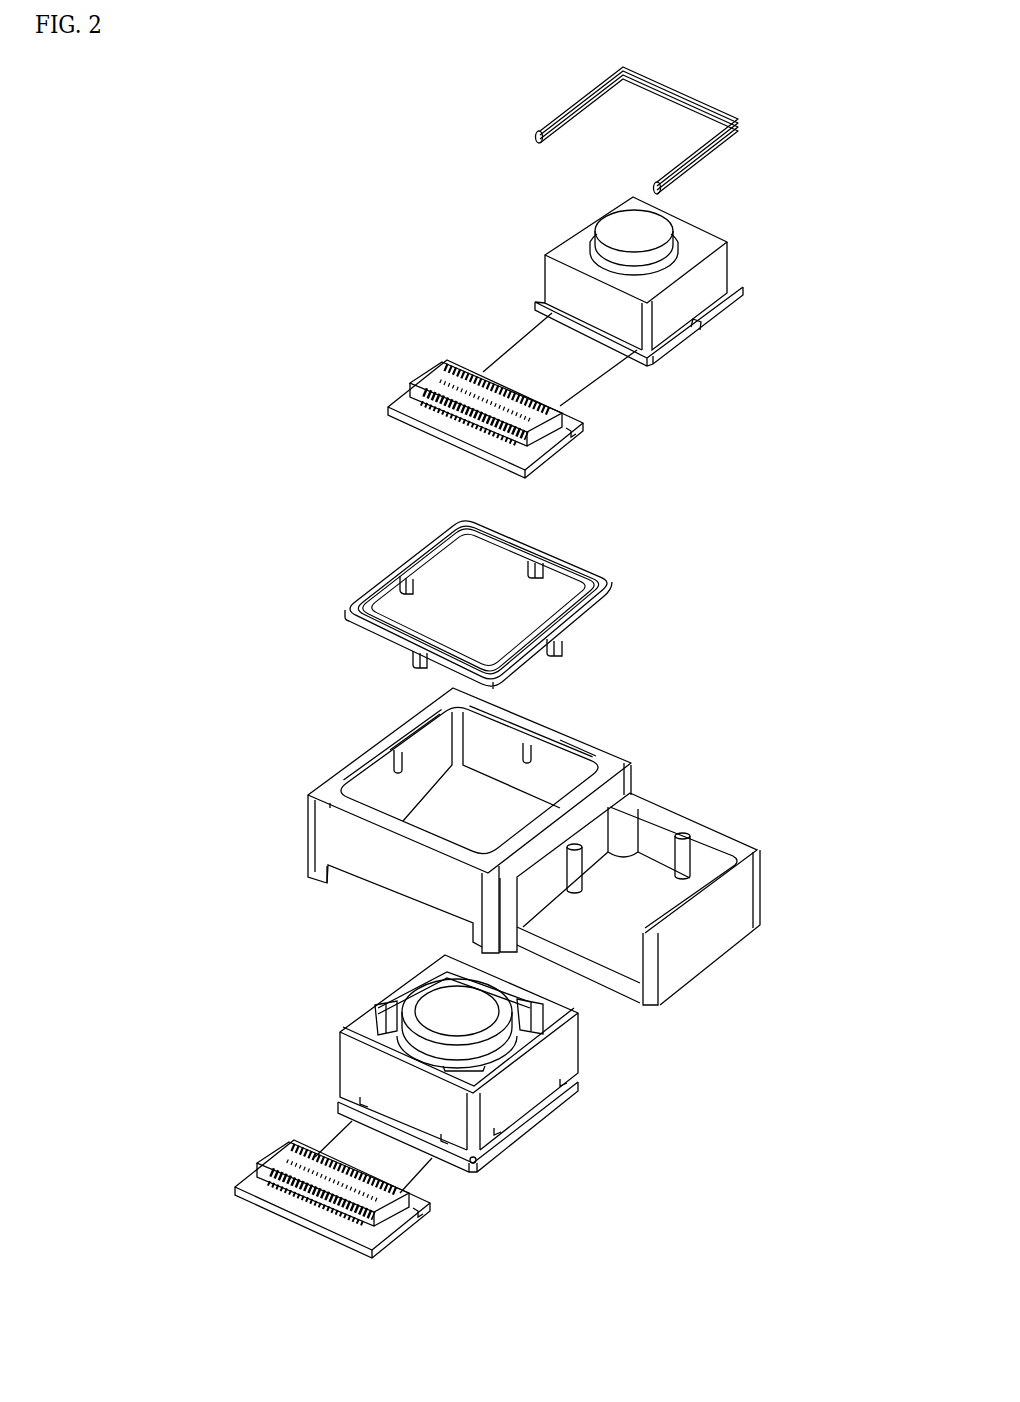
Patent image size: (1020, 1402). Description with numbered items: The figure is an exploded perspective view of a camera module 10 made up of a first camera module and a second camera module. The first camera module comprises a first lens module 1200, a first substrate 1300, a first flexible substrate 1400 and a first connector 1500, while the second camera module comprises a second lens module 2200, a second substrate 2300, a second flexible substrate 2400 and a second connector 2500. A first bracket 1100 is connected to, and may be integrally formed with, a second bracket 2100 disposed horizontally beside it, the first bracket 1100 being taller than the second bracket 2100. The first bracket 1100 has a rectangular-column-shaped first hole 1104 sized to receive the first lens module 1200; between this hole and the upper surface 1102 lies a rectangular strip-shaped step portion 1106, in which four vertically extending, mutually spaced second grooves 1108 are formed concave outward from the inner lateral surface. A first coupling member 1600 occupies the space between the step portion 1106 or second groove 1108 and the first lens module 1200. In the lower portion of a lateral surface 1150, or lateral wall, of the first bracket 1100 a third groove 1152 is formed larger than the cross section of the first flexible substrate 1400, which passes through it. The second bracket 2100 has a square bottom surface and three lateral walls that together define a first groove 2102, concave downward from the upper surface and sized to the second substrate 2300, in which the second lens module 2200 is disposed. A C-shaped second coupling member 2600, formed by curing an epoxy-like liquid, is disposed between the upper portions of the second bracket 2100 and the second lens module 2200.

The camera module 10 is at (280, 220).
The first bracket 1100 is at (320, 776).
The upper surface 1102 is at (597, 750).
The first hole 1104 is at (475, 813).
The step portion 1106 is at (422, 735).
The second groove 1108 is at (397, 763).
The lateral surface 1150 is at (368, 857).
The third groove 1152 is at (393, 899).
The first lens module 1200 is at (345, 1072).
The first substrate 1300 is at (490, 1163).
The first flexible substrate 1400 is at (350, 1137).
The first connector 1500 is at (305, 1207).
The first coupling member 1600 is at (380, 578).
The second bracket 2100 is at (747, 897).
The first groove 2102 is at (621, 884).
The second lens module 2200 is at (720, 265).
The second substrate 2300 is at (727, 308).
The second flexible substrate 2400 is at (575, 387).
The second connector 2500 is at (553, 445).
The second coupling member 2600 is at (740, 114).